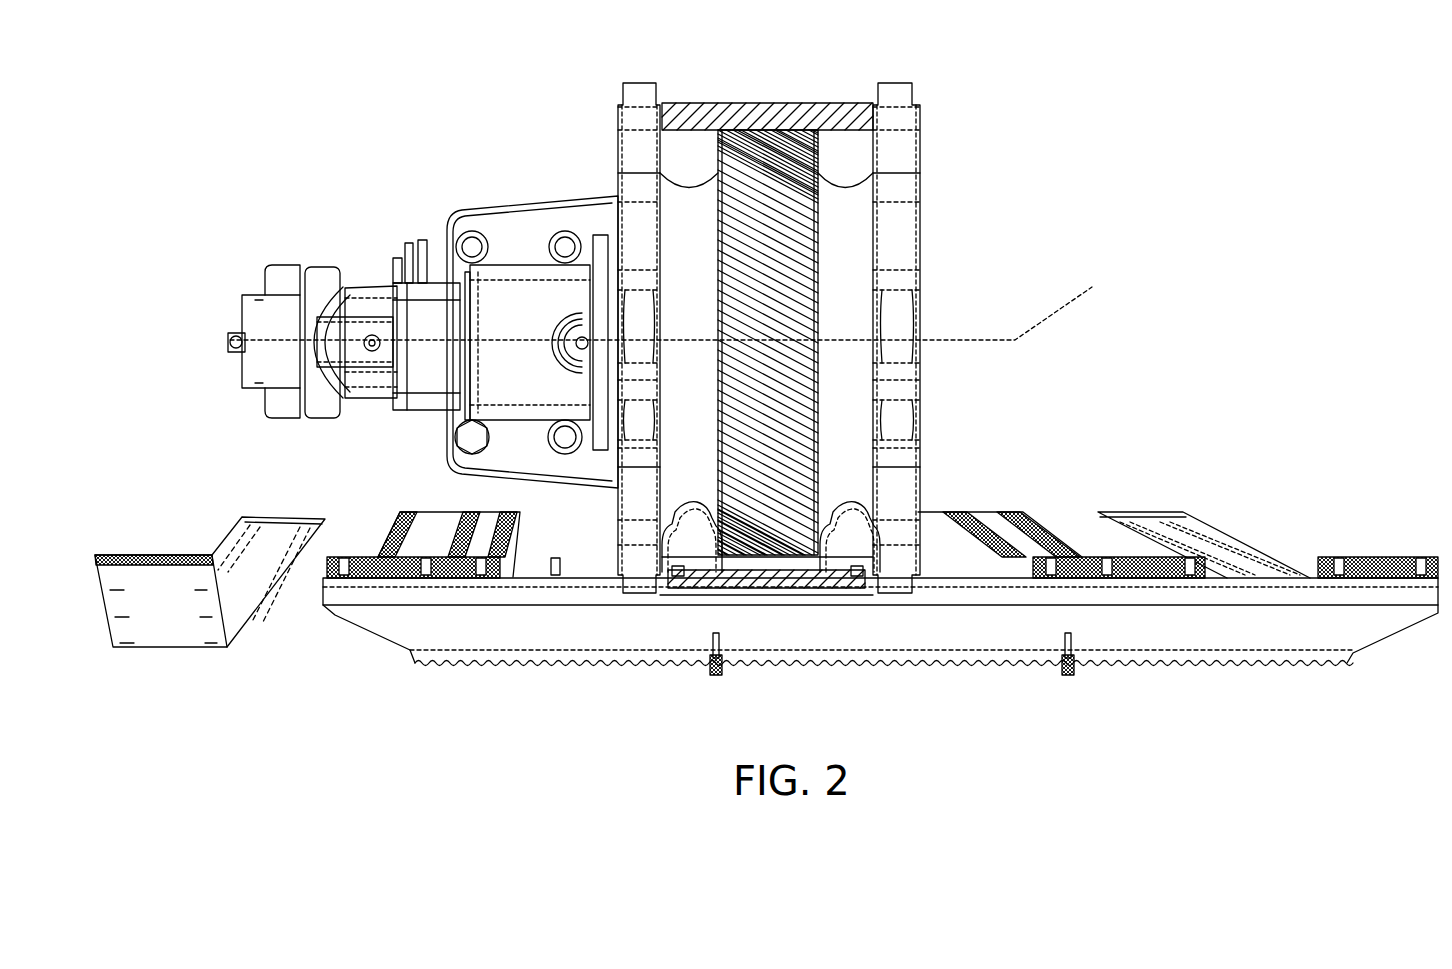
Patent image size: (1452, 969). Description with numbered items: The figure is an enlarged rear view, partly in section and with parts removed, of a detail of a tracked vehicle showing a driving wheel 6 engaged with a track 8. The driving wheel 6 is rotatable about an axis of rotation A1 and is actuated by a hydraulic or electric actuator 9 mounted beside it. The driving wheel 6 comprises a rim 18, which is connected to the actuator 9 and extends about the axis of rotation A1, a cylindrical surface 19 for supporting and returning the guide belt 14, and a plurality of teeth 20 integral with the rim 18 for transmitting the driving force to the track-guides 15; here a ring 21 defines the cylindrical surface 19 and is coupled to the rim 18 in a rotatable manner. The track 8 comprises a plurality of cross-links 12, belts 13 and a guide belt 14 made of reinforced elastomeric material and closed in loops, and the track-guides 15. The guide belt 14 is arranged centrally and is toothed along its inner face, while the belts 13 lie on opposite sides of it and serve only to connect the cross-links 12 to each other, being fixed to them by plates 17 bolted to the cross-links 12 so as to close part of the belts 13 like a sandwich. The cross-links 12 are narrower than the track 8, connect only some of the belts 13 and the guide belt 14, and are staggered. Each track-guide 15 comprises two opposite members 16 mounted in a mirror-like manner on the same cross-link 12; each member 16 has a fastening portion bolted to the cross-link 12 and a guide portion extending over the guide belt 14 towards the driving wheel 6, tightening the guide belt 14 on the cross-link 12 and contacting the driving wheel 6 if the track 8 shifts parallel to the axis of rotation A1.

The driving wheel 6 is at (800, 379).
The track 8 is at (766, 616).
The actuator 9 is at (515, 170).
The cross-link 12 is at (935, 628).
The belt 13 is at (383, 567).
The guide belt 14 is at (773, 565).
The track-guide 15 is at (870, 534).
The member 16 is at (688, 527).
The plate 17 is at (363, 553).
The rim 18 is at (853, 413).
The cylindrical surface 19 is at (770, 200).
The teeth 20 is at (637, 135).
The ring 21 is at (780, 290).
The axis of rotation A1 is at (679, 305).